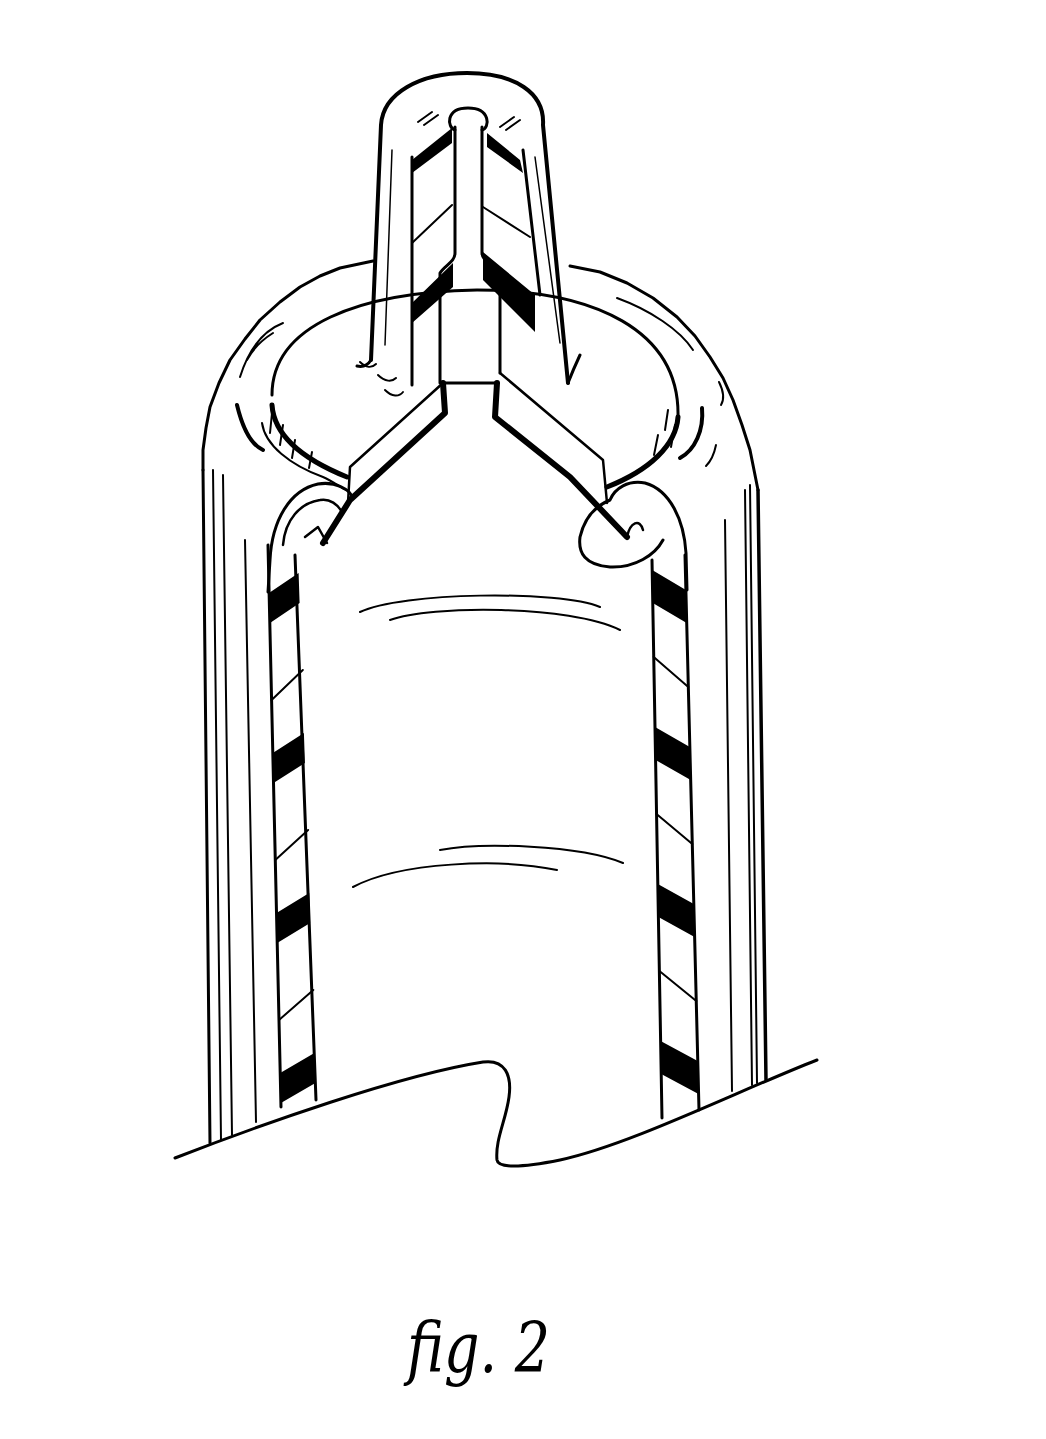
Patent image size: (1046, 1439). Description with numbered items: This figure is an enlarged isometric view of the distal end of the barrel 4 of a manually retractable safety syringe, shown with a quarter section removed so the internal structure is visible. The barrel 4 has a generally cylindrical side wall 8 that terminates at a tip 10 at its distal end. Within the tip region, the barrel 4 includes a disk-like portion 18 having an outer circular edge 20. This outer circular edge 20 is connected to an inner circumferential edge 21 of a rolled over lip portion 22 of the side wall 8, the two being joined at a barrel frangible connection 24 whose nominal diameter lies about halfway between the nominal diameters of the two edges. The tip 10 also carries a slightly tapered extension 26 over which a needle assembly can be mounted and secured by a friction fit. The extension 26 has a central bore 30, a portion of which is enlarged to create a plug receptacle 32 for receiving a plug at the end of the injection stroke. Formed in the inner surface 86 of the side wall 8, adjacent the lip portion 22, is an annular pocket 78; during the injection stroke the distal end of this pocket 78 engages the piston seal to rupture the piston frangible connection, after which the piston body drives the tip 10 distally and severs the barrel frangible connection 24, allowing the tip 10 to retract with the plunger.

The barrel 4 is at (818, 760).
The side wall 8 is at (714, 1014).
The tip 10 is at (591, 204).
The disk-like portion 18 is at (630, 392).
The outer circular edge 20 is at (343, 497).
The inner circumferential edge 21 is at (327, 517).
The rolled over lip portion 22 is at (622, 504).
The barrel frangible connection 24 is at (640, 558).
The tapered extension 26 is at (528, 158).
The central bore 30 is at (470, 118).
The plug receptacle 32 is at (467, 327).
The annular pocket 78 is at (290, 538).
The inner surface 86 is at (650, 957).